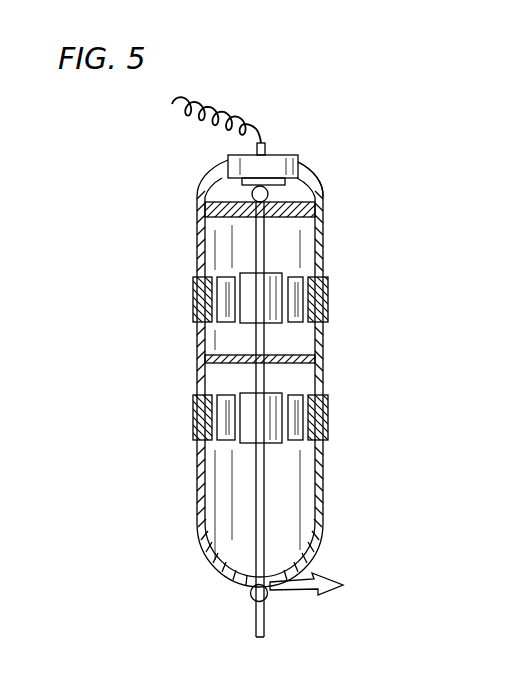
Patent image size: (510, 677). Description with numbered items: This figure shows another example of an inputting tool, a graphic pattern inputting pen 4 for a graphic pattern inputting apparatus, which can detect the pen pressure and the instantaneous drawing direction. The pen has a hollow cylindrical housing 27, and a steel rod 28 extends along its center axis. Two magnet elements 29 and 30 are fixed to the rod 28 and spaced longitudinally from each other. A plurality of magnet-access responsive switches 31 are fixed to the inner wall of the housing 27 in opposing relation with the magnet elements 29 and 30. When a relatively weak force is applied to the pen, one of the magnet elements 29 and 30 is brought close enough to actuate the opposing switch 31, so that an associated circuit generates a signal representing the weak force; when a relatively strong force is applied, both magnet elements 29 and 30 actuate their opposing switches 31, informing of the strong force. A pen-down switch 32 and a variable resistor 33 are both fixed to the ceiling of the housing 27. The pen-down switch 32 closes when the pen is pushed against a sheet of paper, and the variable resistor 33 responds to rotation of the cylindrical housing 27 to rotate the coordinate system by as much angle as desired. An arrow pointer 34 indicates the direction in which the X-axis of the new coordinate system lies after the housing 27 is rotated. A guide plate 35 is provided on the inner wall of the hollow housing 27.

The vibration generator assembly 4 is at (307, 143).
The hollow cylindrical housing 27 is at (197, 510).
The steel rod 28 is at (265, 239).
The magnet element 29 is at (255, 283).
The magnet element 30 is at (252, 402).
The magnet-access responsive switch 31 is at (193, 300).
The pen-down switch 32 is at (323, 185).
The variable resistor 33 is at (269, 163).
The arrow pointer 34 is at (328, 583).
The guide plate 35 is at (300, 357).